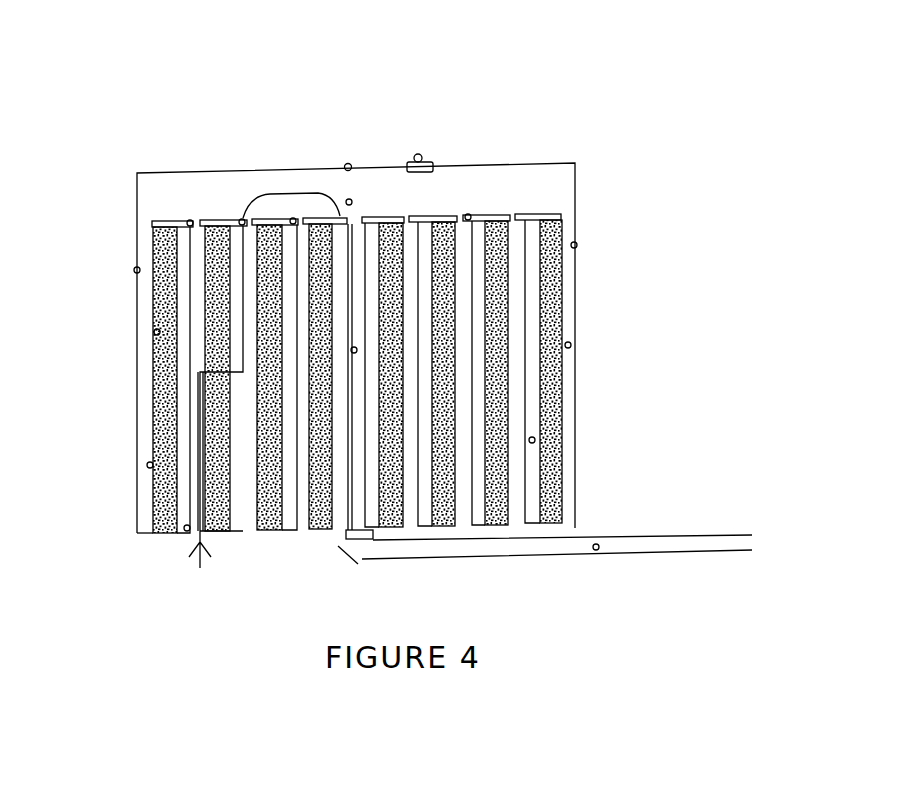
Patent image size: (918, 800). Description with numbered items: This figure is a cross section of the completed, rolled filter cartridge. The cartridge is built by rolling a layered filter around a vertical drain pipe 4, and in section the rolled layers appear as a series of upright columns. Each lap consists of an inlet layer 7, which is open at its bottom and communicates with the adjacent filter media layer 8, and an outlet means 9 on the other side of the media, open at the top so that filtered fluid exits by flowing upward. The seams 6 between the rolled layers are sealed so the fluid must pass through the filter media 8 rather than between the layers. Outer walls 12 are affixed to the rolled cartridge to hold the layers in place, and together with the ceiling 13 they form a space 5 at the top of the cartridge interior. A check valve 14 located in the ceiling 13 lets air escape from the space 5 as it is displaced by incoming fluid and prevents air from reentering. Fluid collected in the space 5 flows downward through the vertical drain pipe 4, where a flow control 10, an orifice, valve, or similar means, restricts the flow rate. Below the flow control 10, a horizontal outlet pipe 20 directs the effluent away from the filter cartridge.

The vertical drain pipe 4 is at (353, 353).
The space 5 is at (347, 200).
The seams 6 is at (293, 220).
The inlet layer 7 is at (185, 529).
The filter media layer 8 is at (157, 333).
The outlet means 9 is at (205, 465).
The flow control 10 is at (352, 540).
The outer walls 12 is at (137, 271).
The ceiling 13 is at (346, 165).
The check valve 14 is at (421, 156).
The horizontal outlet pipe 20 is at (598, 549).